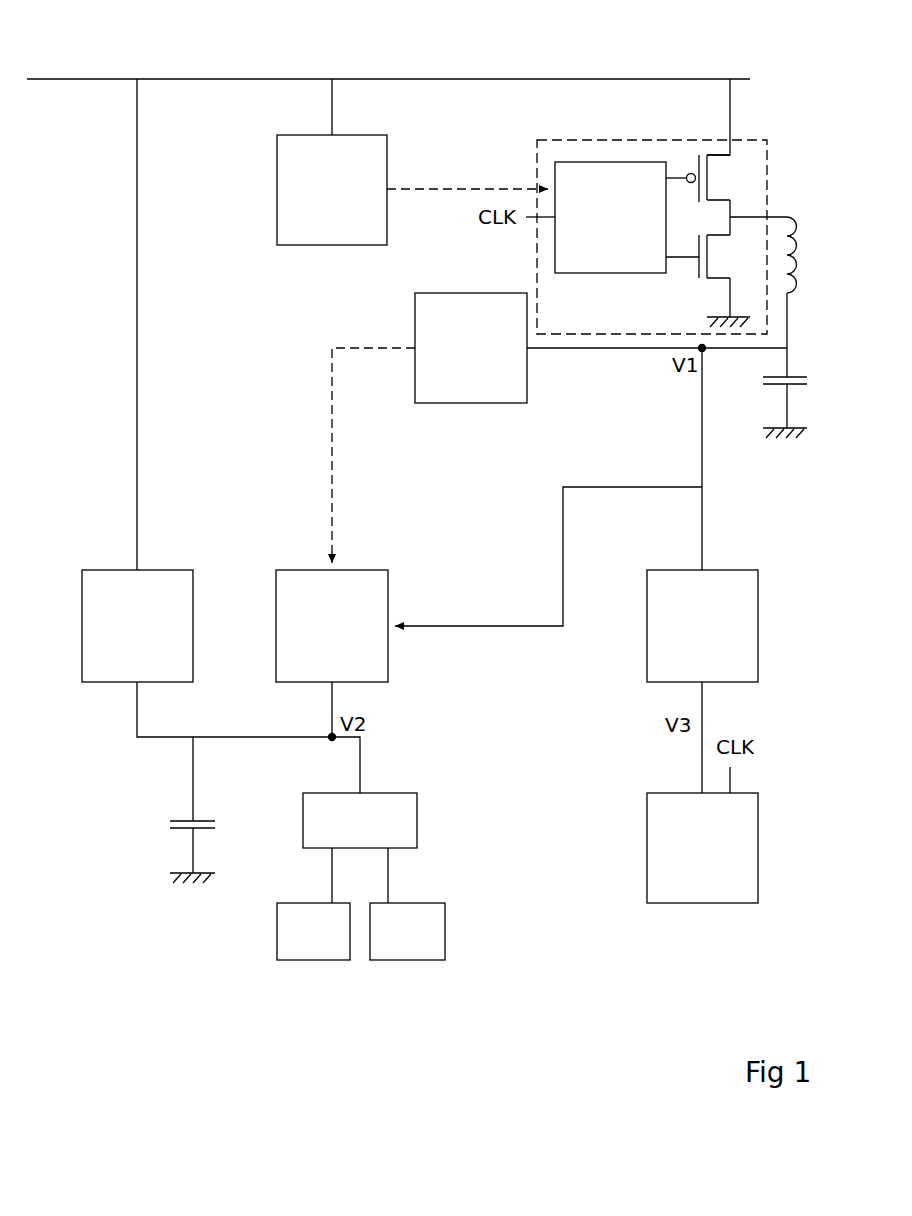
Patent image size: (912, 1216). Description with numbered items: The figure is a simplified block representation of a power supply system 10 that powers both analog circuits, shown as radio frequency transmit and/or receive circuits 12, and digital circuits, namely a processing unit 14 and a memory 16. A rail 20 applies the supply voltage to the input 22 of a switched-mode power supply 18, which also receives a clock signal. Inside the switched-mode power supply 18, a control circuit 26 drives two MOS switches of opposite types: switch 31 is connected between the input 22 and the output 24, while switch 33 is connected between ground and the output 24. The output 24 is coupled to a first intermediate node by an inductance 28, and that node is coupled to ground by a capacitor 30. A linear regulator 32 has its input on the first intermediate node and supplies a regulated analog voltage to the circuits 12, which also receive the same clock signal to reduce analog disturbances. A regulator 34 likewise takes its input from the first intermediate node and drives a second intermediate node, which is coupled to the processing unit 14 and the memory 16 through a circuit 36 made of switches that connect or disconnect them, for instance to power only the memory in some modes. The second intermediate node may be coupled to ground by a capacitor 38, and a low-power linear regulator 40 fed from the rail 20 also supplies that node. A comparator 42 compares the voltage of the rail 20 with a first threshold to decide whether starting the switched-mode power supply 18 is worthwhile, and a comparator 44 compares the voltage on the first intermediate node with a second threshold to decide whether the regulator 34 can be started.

The power supply system 10 is at (686, 58).
The radio frequency transmit and/or receive circuits 12 is at (745, 830).
The processing unit 14 is at (416, 950).
The memory 16 is at (330, 948).
The switched-mode power supply 18 is at (766, 140).
The rail 20 is at (58, 78).
The input 22 is at (733, 130).
The output 24 is at (755, 216).
The control circuit 26 is at (600, 175).
The inductance 28 is at (800, 248).
The capacitor 30 is at (790, 376).
The switch 31 is at (713, 178).
The linear regulator 32 is at (745, 650).
The switch 33 is at (717, 270).
The regulator 34 is at (390, 590).
The circuit 36 is at (392, 798).
The capacitor 38 is at (205, 816).
The low-power linear regulator 40 is at (170, 570).
The comparator 42 is at (378, 142).
The comparator 44 is at (505, 395).